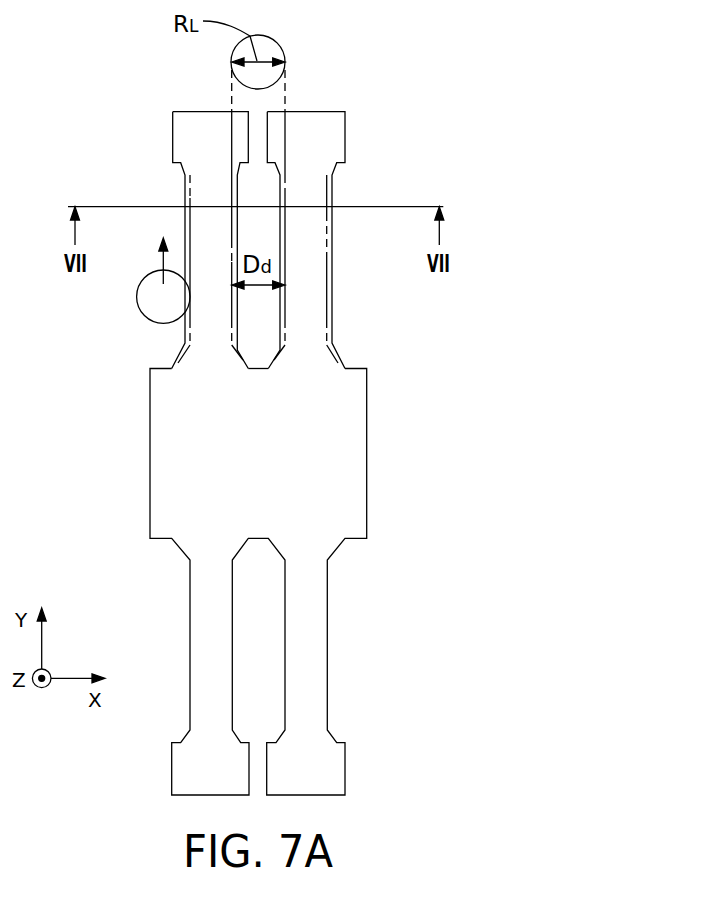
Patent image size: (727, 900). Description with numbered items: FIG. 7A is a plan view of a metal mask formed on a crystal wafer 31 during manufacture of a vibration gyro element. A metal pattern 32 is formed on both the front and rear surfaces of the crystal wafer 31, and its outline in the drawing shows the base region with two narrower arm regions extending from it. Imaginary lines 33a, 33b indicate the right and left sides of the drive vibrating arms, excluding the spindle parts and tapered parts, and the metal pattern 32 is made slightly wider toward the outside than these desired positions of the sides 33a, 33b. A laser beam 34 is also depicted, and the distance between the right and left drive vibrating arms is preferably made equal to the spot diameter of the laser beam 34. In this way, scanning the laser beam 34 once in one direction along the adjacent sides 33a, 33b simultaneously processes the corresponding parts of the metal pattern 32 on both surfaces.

The crystal wafer 31 is at (441, 356).
The metal pattern 32 is at (367, 464).
The imaginary line 33a is at (231, 235).
The imaginary line 33b is at (327, 285).
The laser beam 34 is at (268, 36).